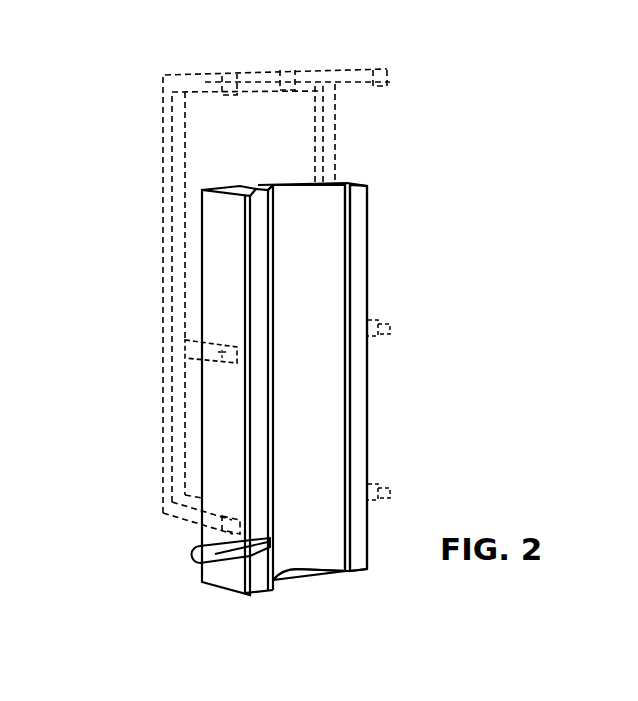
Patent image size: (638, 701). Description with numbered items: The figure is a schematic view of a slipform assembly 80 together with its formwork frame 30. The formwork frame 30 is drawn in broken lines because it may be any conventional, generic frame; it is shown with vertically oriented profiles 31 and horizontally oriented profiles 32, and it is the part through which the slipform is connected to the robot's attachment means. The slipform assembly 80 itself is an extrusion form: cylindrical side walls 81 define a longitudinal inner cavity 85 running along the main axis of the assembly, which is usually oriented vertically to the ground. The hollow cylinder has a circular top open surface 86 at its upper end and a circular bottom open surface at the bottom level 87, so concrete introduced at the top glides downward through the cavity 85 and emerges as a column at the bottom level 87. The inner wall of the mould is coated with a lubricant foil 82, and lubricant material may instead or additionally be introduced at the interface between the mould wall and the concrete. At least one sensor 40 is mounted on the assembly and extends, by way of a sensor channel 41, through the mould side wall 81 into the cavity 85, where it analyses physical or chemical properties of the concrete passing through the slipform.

The formwork frame 30 is at (147, 140).
The vertically oriented profiles 31 is at (169, 222).
The horizontally oriented profiles 32 is at (185, 328).
The sensor 40 is at (196, 556).
The sensor channel 41 is at (260, 547).
The slipform assembly 80 is at (336, 336).
The side walls 81 is at (358, 207).
The lubricant foil 82 is at (348, 277).
The inner cavity 85 is at (322, 384).
The top open surface 86 is at (300, 232).
The bottom level 87 is at (307, 582).